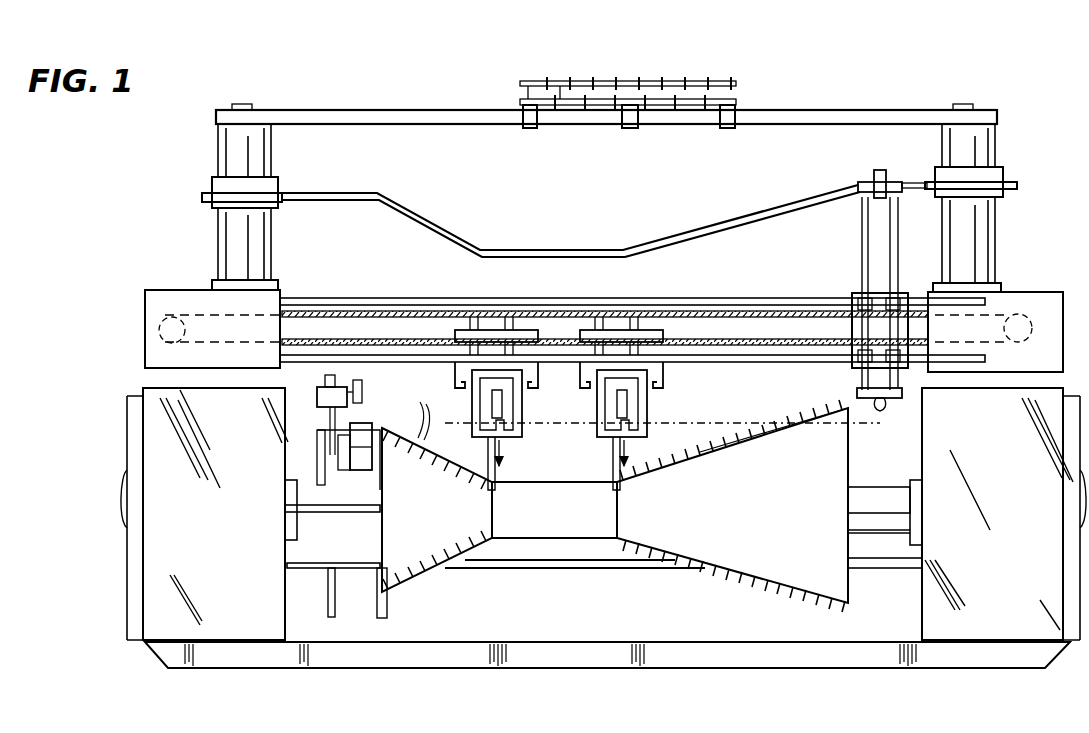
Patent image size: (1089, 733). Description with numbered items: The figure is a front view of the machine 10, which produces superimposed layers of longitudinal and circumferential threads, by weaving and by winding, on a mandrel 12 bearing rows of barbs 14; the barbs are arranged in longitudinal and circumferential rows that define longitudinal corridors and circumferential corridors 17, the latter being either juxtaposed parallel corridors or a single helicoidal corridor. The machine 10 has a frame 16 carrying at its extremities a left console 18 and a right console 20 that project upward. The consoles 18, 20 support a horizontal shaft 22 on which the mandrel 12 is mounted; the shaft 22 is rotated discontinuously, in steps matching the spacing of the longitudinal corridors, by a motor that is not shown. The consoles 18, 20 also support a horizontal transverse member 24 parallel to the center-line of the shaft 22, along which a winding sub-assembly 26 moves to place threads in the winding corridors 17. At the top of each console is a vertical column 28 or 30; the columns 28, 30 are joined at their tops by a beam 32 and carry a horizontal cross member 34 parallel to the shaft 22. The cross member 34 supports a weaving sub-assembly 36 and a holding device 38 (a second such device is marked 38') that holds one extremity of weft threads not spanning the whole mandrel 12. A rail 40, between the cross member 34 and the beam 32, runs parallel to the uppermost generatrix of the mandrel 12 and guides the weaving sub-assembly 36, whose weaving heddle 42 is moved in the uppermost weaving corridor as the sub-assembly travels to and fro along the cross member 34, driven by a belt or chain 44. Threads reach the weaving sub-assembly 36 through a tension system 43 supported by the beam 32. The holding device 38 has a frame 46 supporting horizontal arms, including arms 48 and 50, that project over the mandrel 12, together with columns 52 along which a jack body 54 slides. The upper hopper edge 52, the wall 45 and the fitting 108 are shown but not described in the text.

The machine 10 is at (182, 226).
The mandrel 12 is at (655, 537).
The barbs 14 is at (790, 600).
The frame 16 is at (172, 652).
The circumferential corridors 17 is at (413, 413).
The left console 18 is at (172, 572).
The right console 20 is at (992, 564).
The horizontal shaft 22 is at (900, 494).
The transverse member 24 is at (483, 567).
The winding sub-assembly 26 is at (342, 547).
The vertical column 28 is at (245, 172).
The vertical column 30 is at (975, 136).
The beam 32 is at (402, 112).
The cross member 34 is at (680, 298).
The weaving sub-assembly 36 is at (858, 330).
The holding device 38 is at (616, 403).
The second nozzle assembly 38' is at (501, 403).
The rail 40 is at (708, 232).
The weaving heddle 42 is at (882, 412).
The tension system 43 is at (740, 85).
The belt or chain 44 is at (545, 316).
The hopper wall 45 is at (754, 504).
The frame 46 is at (165, 345).
The horizontal arm 48 is at (1026, 292).
The horizontal arm 50 is at (615, 527).
The columns 52 is at (690, 455).
The jack body 54 is at (742, 422).
The cross fitting 108 is at (868, 182).